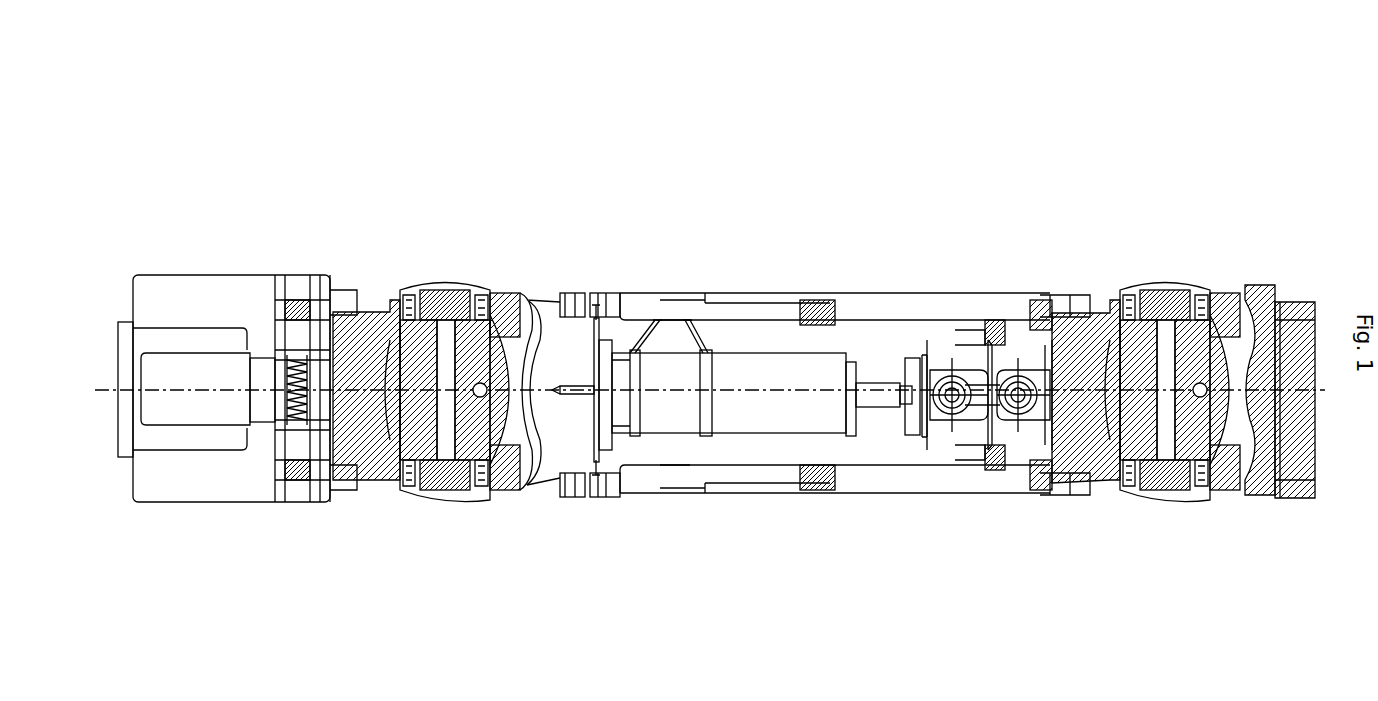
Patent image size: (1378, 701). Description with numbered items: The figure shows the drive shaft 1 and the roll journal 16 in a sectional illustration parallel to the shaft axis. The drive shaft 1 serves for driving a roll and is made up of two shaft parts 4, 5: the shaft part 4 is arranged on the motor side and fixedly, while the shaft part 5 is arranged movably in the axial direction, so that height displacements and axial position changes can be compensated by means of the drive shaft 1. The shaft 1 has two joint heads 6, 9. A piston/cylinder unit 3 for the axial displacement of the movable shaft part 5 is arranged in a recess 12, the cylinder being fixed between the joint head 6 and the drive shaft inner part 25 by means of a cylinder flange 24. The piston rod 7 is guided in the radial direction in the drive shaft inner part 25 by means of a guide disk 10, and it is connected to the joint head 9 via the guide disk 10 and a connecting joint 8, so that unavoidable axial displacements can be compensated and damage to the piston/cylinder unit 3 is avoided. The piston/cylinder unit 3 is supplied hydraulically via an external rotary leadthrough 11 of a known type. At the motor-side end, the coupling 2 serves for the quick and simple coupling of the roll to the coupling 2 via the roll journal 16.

The drive shaft 1 is at (350, 95).
The coupling 2 is at (178, 298).
The piston/cylinder unit 3 is at (742, 370).
The shaft part 4 is at (828, 157).
The shaft part 5 is at (350, 155).
The joint head 6 is at (455, 276).
The piston rod 7 is at (875, 388).
The connecting joint 8 is at (987, 407).
The joint head 9 is at (1153, 280).
The guide disk 10 is at (912, 425).
The external rotary leadthrough 11 is at (642, 303).
The recess 12 is at (873, 430).
The roll journal 16 is at (187, 438).
The cylinder flange 24 is at (603, 422).
The drive shaft inner part 25 is at (762, 452).